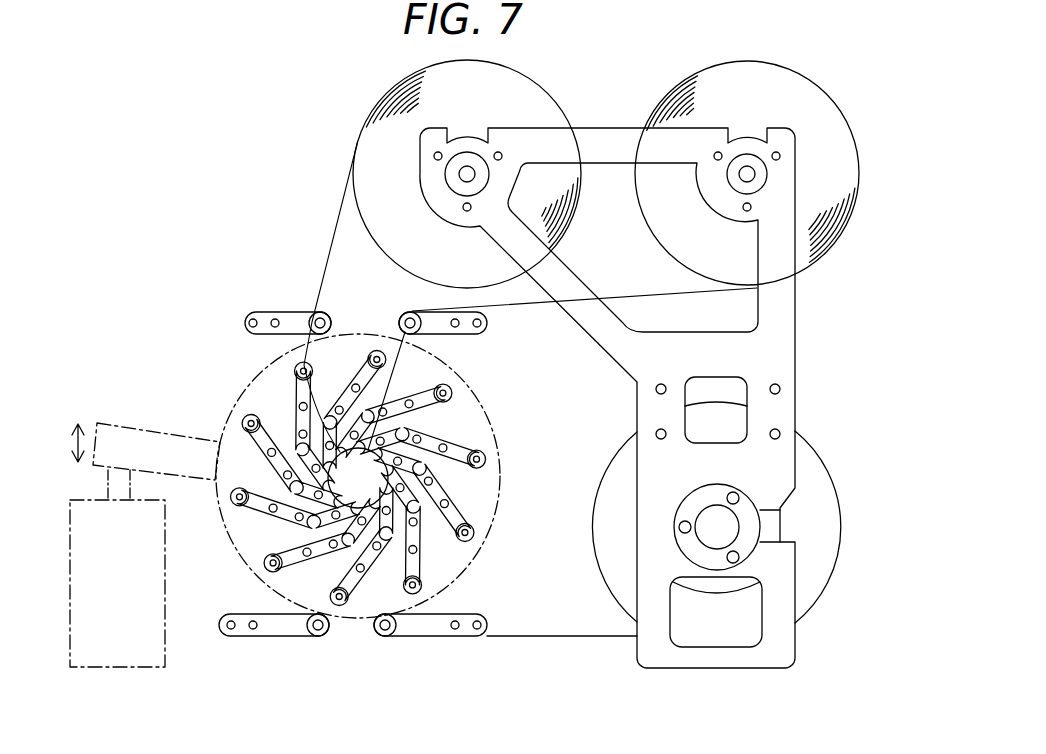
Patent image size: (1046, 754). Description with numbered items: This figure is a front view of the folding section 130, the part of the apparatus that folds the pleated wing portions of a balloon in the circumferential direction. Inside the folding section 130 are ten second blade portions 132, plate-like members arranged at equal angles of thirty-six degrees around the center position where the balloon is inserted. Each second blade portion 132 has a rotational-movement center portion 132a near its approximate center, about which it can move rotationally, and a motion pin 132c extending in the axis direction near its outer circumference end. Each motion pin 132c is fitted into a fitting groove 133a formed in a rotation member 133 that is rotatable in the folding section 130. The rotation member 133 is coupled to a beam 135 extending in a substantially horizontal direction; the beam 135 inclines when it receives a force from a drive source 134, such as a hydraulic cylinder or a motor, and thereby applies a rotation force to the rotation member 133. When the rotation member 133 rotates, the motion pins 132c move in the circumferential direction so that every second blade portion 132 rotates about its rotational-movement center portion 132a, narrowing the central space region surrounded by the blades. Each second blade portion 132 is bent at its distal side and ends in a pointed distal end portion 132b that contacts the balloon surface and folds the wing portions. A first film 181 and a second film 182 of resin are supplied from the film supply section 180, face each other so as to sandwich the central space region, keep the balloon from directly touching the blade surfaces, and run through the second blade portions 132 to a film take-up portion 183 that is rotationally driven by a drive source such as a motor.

The folding section 130 is at (209, 320).
The second blade portion 132 is at (235, 438).
The rotational-movement center portion 132a is at (283, 471).
The distal end portion 132b is at (320, 495).
The motion pin 132c is at (262, 408).
The rotation member 133 is at (476, 412).
The fitting groove 133a is at (258, 393).
The drive source 134 is at (118, 632).
The beam 135 is at (140, 422).
The film supply section 180 is at (362, 95).
The first film 181 is at (345, 222).
The second film 182 is at (398, 322).
The film take-up portion 183 is at (818, 470).